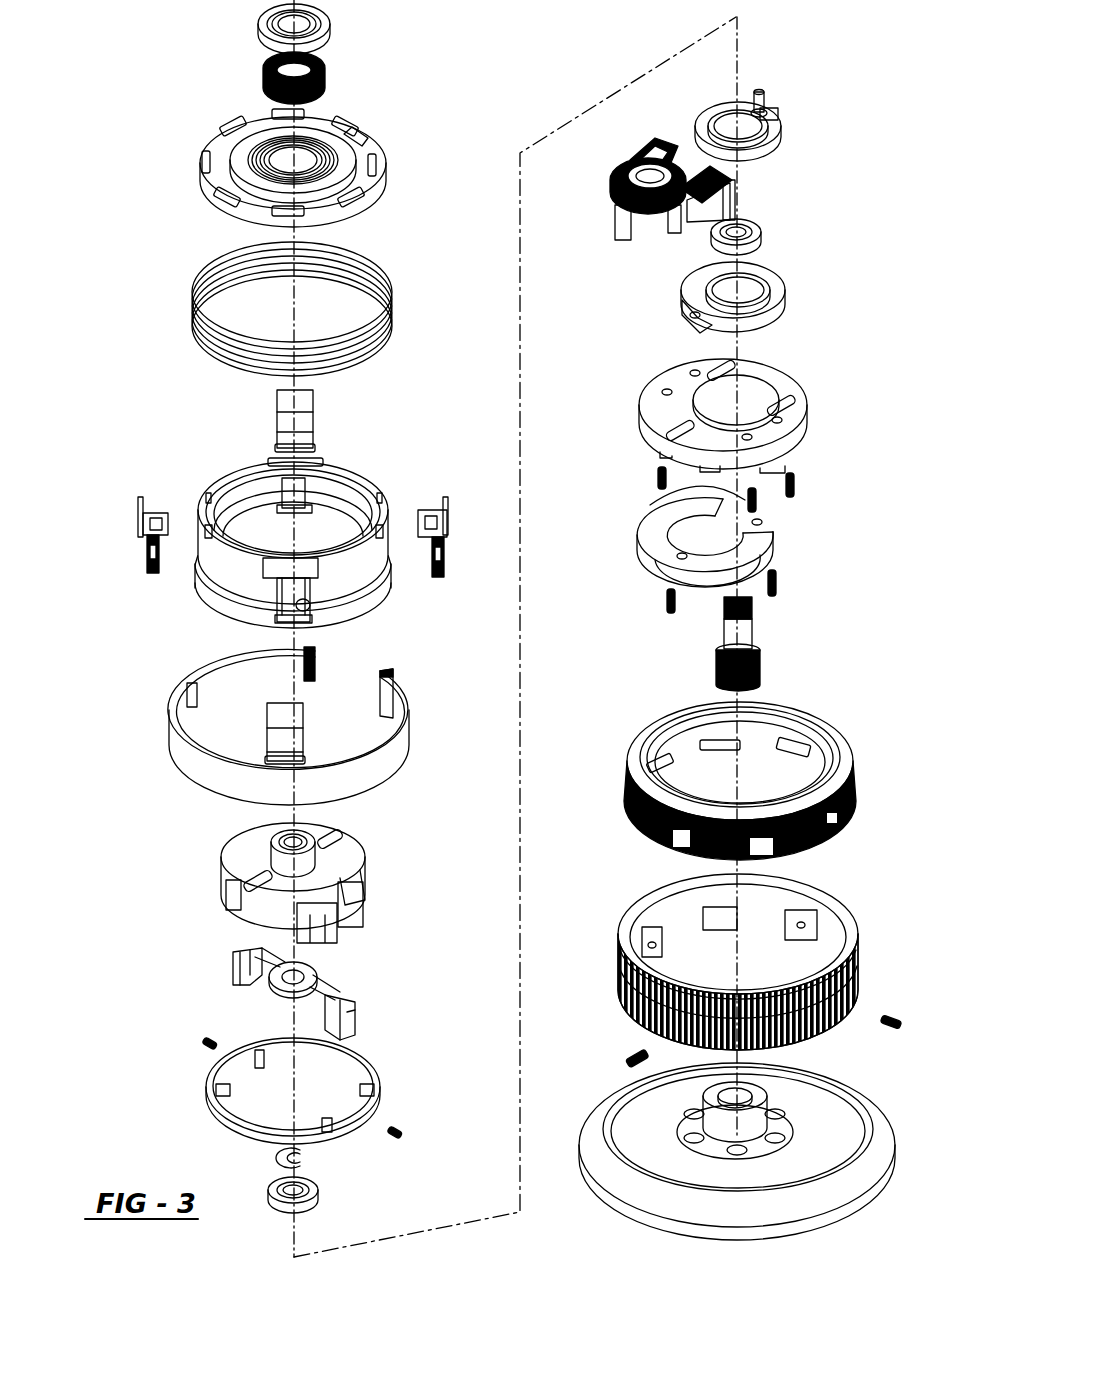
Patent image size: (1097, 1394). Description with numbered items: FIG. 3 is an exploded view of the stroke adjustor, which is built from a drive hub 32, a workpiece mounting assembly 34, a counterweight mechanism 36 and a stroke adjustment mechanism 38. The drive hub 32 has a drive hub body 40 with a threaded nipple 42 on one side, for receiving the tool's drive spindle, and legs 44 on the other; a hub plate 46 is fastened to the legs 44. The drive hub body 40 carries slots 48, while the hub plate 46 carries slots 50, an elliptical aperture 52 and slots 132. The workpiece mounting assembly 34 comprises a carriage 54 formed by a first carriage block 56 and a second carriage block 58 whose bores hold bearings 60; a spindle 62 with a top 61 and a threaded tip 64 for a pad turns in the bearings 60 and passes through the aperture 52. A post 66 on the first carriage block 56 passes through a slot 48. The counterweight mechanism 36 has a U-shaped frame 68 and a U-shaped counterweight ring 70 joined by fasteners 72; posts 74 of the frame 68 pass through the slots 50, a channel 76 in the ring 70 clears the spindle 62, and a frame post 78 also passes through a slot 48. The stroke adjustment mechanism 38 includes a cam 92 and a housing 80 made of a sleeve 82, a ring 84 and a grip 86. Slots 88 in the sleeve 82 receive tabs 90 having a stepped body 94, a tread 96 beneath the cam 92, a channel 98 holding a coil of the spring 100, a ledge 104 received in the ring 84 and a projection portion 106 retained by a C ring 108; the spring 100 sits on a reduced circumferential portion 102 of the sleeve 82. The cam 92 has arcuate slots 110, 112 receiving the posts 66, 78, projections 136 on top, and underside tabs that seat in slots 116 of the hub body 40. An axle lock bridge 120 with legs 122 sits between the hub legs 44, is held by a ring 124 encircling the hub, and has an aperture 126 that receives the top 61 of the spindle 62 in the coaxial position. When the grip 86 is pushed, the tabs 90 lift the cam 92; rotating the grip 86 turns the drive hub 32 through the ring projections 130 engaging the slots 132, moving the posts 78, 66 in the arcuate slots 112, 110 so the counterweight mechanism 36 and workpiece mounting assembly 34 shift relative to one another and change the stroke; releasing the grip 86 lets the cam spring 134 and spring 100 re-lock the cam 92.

The drive hub 32 is at (293, 885).
The workpiece mounting assembly 34 is at (791, 279).
The counterweight mechanism 36 is at (640, 255).
The stroke adjustment mechanism 38 is at (888, 903).
The drive hub body 40 is at (222, 860).
The nipple 42 is at (330, 830).
The legs 44 is at (355, 913).
The hub plate 46 is at (769, 388).
The slots 48 is at (250, 890).
The slots 50 is at (797, 383).
The aperture 52 is at (765, 368).
The carriage 54 is at (788, 141).
The first carriage block 56 is at (783, 128).
The second carriage block 58 is at (780, 274).
The bearings 60 is at (318, 1203).
The top of the spindle 61 is at (758, 640).
The spindle 62 is at (753, 627).
The threaded tip 64 is at (760, 670).
The post 66 is at (766, 92).
The frame 68 is at (660, 205).
The counterweight ring 70 is at (657, 517).
The fasteners 72 is at (660, 600).
The posts 74 is at (625, 239).
The channel 76 is at (683, 540).
The post 78 is at (610, 185).
The housing 80 is at (237, 559).
The sleeve 82 is at (225, 596).
The ring 84 is at (857, 777).
The grip 86 is at (623, 940).
The slots 88 is at (308, 604).
The tabs 90 is at (133, 513).
The cap tab 92 is at (362, 147).
The stepped shape body 94 is at (147, 547).
The tread 96 is at (170, 512).
The channel 98 is at (145, 560).
The spring 100 is at (195, 320).
The reduced circumferential portion 102 is at (365, 497).
The ledge 104 is at (425, 555).
The projection portion 106 is at (445, 500).
The C ring 108 is at (397, 727).
The arcuate slot 110 is at (212, 142).
The arcuate slot 112 is at (345, 165).
The slots 116 is at (363, 883).
The axle lock bridge 120 is at (296, 994).
The legs 122 is at (233, 963).
The ring 124 is at (383, 1068).
The aperture 126 is at (275, 997).
The ring projections 130 is at (790, 748).
The slots 132 is at (783, 450).
The cam spring 134 is at (333, 62).
The projections 136 is at (342, 125).